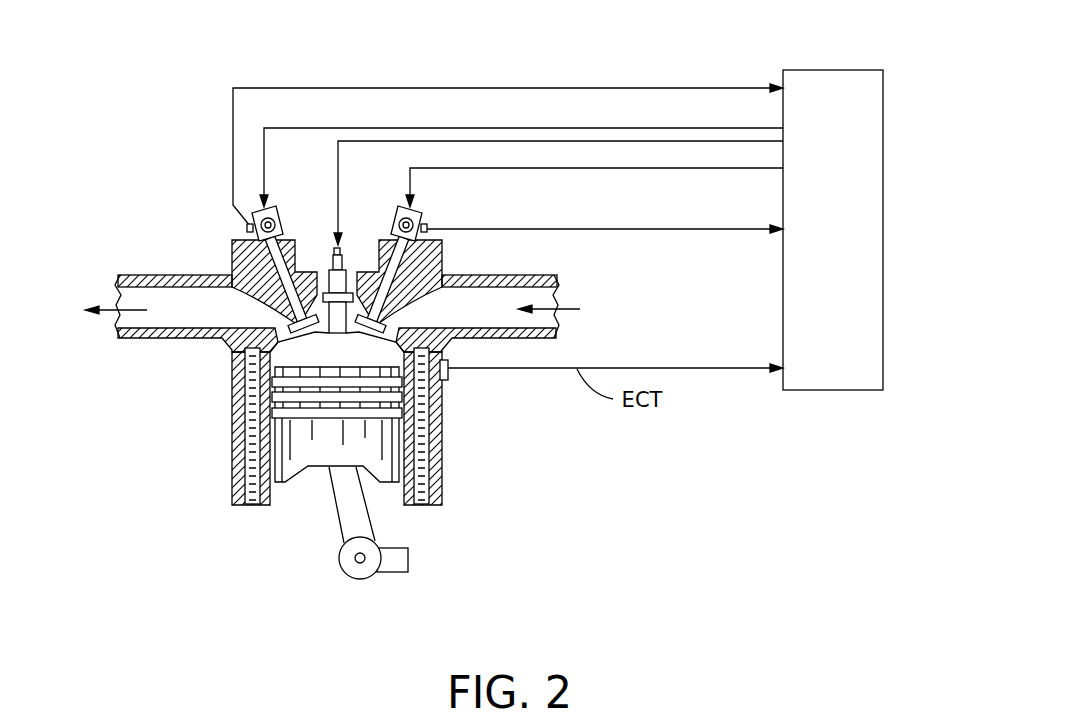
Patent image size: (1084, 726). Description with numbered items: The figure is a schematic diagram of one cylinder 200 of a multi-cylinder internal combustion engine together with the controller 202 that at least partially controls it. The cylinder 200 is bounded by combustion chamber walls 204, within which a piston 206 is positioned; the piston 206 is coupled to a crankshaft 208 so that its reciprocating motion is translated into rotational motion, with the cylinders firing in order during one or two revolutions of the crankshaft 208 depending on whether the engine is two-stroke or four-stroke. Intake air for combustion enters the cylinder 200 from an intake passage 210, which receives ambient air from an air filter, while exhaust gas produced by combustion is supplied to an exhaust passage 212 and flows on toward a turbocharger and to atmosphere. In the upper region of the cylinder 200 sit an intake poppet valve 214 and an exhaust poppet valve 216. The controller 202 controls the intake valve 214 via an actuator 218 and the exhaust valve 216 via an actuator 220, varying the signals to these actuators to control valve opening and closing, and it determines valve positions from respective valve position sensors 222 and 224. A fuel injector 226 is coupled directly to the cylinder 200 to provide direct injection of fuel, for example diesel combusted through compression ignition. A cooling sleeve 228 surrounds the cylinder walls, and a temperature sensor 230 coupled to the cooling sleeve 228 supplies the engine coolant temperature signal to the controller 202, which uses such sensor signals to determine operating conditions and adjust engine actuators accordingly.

The cylinder 200 is at (316, 363).
The controller 202 is at (815, 242).
The combustion chamber walls 204 is at (343, 451).
The piston 206 is at (318, 452).
The crankshaft 208 is at (378, 549).
The intake passage 210 is at (453, 320).
The exhaust passage 212 is at (198, 320).
The intake poppet valve 214 is at (383, 328).
The exhaust poppet valve 216 is at (293, 327).
The actuator 218 is at (402, 220).
The actuator 220 is at (276, 208).
The valve position sensor 222 is at (427, 226).
The valve position sensor 224 is at (248, 228).
The fuel injector 226 is at (344, 262).
The cooling sleeve 228 is at (422, 453).
The temperature sensor 230 is at (448, 378).